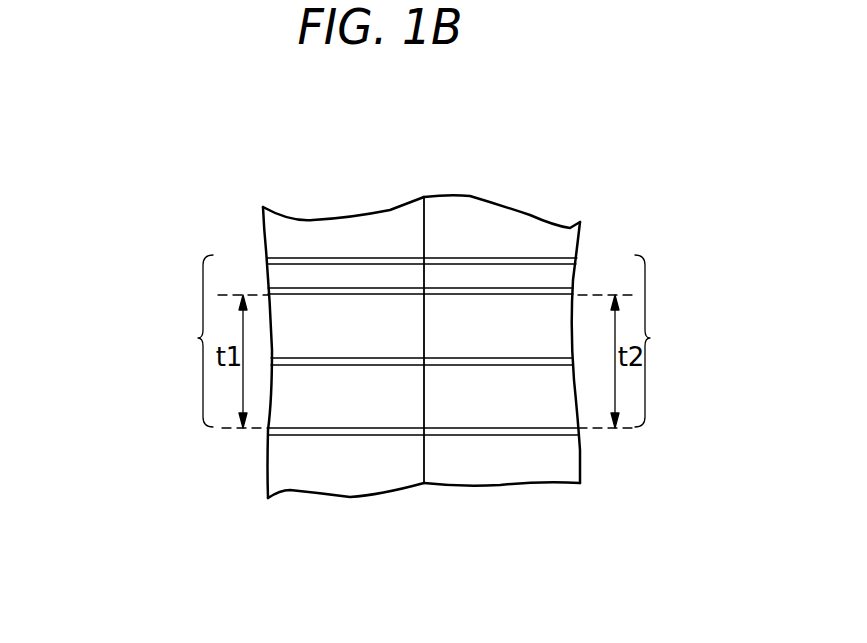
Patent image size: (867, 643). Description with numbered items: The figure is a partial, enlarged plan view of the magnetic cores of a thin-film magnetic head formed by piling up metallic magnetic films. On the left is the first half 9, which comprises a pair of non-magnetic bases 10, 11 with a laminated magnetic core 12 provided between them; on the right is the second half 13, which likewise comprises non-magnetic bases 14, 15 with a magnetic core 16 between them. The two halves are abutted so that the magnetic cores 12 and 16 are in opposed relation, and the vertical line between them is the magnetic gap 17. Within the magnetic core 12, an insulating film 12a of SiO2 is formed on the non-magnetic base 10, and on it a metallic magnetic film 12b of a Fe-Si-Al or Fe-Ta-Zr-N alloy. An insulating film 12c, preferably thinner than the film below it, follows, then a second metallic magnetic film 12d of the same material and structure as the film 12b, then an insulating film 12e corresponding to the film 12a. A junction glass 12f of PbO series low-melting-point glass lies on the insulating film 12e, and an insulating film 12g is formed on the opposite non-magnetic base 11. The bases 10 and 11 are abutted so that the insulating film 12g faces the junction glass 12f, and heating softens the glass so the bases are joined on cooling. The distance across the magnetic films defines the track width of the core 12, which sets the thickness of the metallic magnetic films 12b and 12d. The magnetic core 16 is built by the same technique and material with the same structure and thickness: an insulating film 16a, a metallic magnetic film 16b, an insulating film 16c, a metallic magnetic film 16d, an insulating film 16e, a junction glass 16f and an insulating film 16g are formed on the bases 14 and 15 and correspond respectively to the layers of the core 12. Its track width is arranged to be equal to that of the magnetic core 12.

The first half 9 is at (272, 205).
The non-magnetic base 10 is at (287, 487).
The non-magnetic base 11 is at (269, 236).
The magnetic core 12 is at (189, 341).
The insulating film 12a is at (372, 433).
The metallic magnetic film 12b is at (325, 420).
The insulating film 12c is at (325, 358).
The metallic magnetic film 12d is at (372, 317).
The insulating film 12e is at (288, 290).
The junction glass 12f is at (308, 275).
The insulating film 12g is at (352, 257).
The second half 13 is at (448, 193).
The non-magnetic base 14 is at (518, 477).
The non-magnetic base 15 is at (485, 220).
The magnetic core 16 is at (662, 341).
The insulating film 16a is at (480, 433).
The metallic magnetic film 16b is at (537, 415).
The insulating film 16c is at (548, 365).
The metallic magnetic film 16d is at (535, 317).
The insulating film 16e is at (515, 292).
The junction glass 16f is at (458, 273).
The insulating film 16g is at (503, 262).
The magnetic gap 17 is at (422, 460).